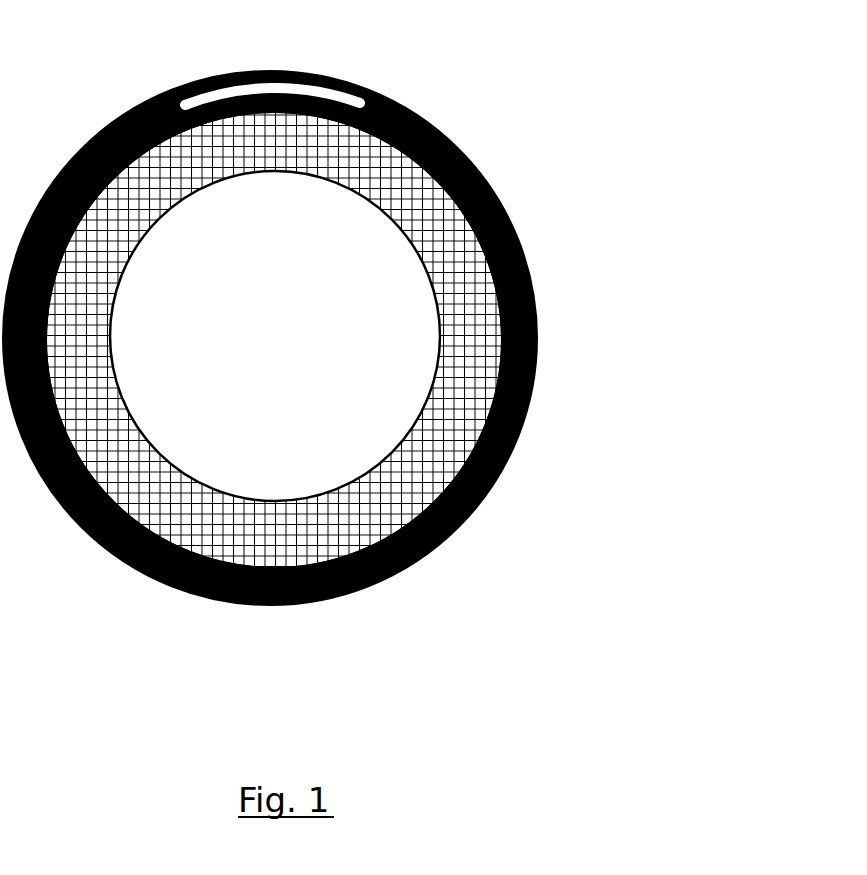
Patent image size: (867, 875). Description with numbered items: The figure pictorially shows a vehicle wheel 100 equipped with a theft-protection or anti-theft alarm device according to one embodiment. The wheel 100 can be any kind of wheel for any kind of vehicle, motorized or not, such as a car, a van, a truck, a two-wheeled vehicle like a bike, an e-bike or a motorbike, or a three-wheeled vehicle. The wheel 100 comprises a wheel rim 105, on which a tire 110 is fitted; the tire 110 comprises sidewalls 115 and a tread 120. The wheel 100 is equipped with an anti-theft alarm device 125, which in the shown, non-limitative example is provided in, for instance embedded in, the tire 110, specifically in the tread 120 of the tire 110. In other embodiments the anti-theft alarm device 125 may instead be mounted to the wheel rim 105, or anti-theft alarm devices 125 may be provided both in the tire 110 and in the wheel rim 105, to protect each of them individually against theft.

The vehicle wheel 100 is at (371, 355).
The wheel rim 105 is at (278, 335).
The tire 110 is at (531, 288).
The sidewalls 115 is at (275, 530).
The tread 120 is at (453, 537).
The anti-theft alarm device 125 is at (310, 95).